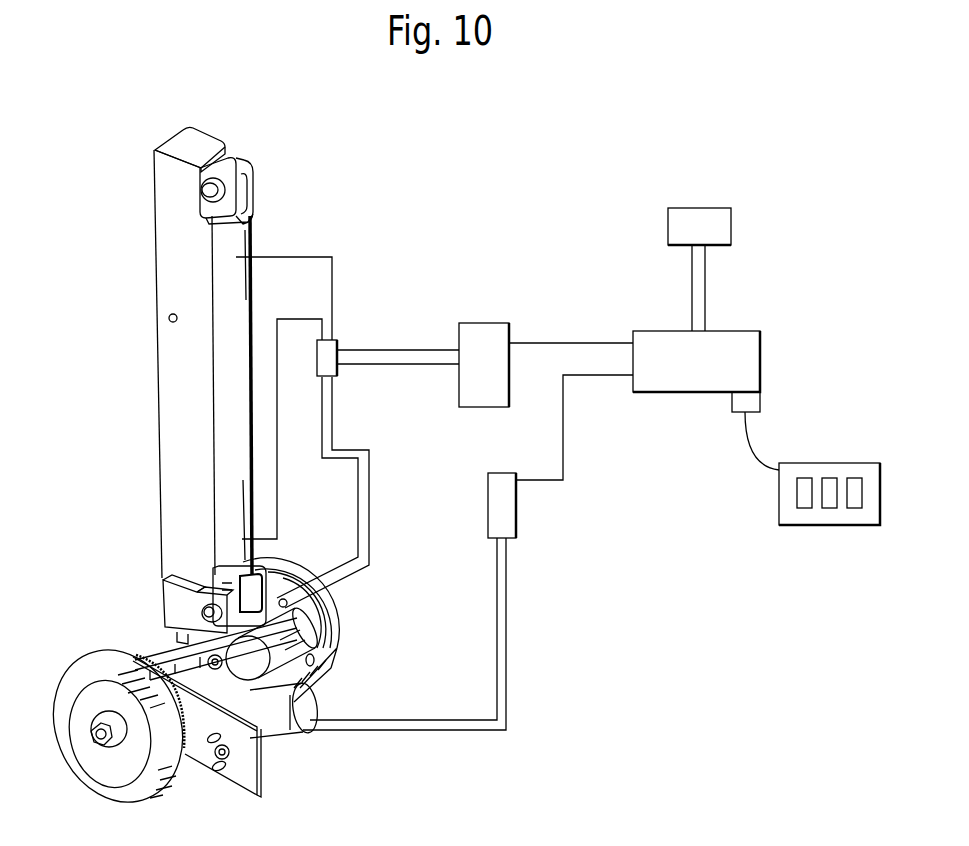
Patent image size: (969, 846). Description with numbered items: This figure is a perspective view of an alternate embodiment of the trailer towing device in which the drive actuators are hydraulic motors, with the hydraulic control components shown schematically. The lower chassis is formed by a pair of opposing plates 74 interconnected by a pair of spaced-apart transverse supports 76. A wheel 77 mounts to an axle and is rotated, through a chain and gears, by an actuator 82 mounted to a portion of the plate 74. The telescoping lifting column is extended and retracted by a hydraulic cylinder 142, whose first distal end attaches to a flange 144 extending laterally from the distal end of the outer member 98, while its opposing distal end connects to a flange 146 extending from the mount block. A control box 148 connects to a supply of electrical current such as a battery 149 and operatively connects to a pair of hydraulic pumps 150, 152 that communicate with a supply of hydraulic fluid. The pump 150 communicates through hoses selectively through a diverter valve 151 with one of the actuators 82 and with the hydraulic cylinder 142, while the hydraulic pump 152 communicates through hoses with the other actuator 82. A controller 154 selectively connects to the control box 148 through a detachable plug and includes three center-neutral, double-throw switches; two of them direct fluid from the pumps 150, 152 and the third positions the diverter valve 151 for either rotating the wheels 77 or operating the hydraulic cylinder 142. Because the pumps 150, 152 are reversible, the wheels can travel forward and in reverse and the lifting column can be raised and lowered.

The plate 74 is at (340, 653).
The transverse support 76 is at (156, 649).
The wheel 77 is at (274, 578).
The actuator 82 is at (278, 734).
The outer member 98 is at (190, 383).
The hydraulic cylinder 142 is at (226, 245).
The flange 144 is at (247, 172).
The flange 146 is at (166, 598).
The control box 148 is at (737, 347).
The battery 149 is at (698, 215).
The hydraulic pump 150 is at (487, 330).
The diverter valve 151 is at (327, 346).
The hydraulic pump 152 is at (498, 478).
The controller 154 is at (798, 518).